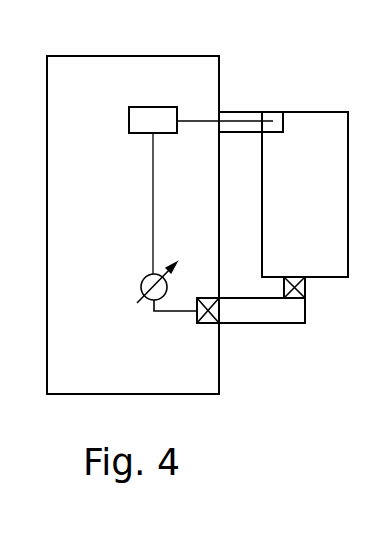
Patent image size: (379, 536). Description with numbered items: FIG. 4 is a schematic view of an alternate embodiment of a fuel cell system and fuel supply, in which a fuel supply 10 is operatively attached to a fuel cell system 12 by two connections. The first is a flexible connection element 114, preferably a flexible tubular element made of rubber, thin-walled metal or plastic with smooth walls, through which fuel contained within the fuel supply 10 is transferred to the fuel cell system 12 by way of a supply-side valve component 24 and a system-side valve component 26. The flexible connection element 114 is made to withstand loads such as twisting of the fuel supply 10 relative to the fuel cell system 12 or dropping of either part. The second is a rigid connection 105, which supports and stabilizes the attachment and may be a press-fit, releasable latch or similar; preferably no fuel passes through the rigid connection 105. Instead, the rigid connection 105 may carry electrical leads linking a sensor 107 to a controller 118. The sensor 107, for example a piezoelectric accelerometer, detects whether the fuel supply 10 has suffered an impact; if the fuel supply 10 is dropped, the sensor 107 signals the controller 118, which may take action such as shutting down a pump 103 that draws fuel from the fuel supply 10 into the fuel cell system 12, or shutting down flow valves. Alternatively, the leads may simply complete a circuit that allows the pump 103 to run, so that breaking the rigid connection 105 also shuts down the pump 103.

The fuel supply 10 is at (318, 206).
The fuel cell system 12 is at (112, 220).
The supply-side valve component 24 is at (306, 289).
The system-side valve component 26 is at (206, 324).
The pump 103 is at (143, 277).
The rigid connection 105 is at (238, 116).
The sensor 107 is at (277, 116).
The flexible connection element 114 is at (290, 316).
The controller 118 is at (201, 190).